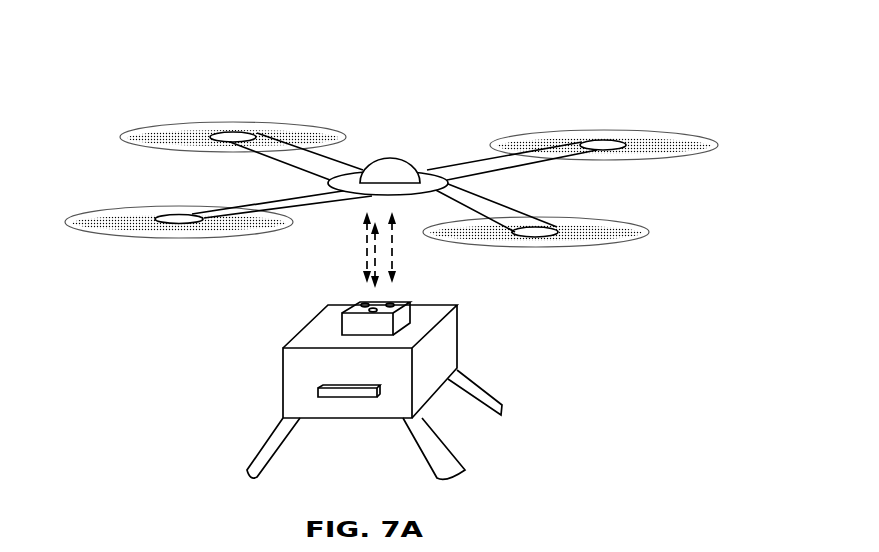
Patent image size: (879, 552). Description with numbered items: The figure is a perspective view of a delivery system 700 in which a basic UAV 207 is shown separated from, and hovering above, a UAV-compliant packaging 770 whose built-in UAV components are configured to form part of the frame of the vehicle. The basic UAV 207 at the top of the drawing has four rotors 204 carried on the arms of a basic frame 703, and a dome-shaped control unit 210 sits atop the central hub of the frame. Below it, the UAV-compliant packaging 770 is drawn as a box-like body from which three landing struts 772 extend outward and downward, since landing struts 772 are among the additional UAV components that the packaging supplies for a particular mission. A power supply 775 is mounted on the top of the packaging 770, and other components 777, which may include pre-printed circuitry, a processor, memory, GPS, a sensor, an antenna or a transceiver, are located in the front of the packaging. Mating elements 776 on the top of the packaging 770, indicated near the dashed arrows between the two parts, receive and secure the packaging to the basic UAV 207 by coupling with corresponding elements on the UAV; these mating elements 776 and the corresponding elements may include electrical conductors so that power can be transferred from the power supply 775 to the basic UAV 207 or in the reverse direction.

The delivery system 700 is at (178, 88).
The rotors 204 is at (693, 137).
The basic frame 703 is at (265, 200).
The basic UAV 207 is at (450, 180).
The control unit 210 is at (392, 158).
The UAV-compliant packaging 770 is at (457, 340).
The landing struts 772 is at (480, 387).
The power supply 775 is at (340, 323).
The mating elements 776 is at (363, 304).
The other components 777 is at (350, 387).